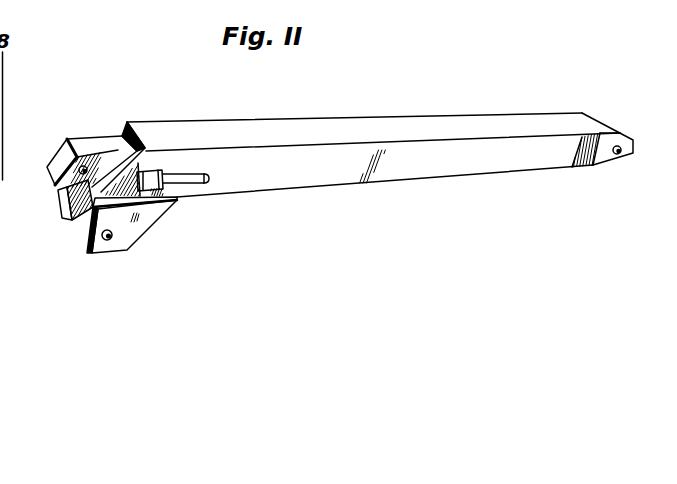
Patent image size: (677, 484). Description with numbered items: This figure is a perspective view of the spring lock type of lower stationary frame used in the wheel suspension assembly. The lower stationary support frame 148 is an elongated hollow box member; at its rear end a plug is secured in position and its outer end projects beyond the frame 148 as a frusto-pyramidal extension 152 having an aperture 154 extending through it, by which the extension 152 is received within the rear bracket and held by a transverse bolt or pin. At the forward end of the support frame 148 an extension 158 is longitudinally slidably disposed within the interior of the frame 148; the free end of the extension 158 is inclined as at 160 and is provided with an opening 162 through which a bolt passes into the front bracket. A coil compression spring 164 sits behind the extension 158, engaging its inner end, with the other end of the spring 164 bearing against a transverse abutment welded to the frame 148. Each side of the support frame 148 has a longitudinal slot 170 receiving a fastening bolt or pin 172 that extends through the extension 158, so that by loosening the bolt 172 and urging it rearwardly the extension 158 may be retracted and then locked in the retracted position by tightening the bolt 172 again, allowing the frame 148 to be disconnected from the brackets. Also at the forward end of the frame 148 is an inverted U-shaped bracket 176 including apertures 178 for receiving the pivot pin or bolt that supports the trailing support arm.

The lower stationary support frame 148 is at (345, 173).
The frusto-pyramidal extension 152 is at (608, 126).
The aperture 154 is at (617, 155).
The extension 158 is at (100, 145).
The inclined free end 160 is at (58, 153).
The opening 162 is at (72, 187).
The coil compression spring 164 is at (192, 173).
The longitudinal slot 170 is at (211, 178).
The fastening bolt or pin 172 is at (159, 167).
The inverted U-shaped bracket 176 is at (158, 206).
The apertures 178 is at (88, 254).